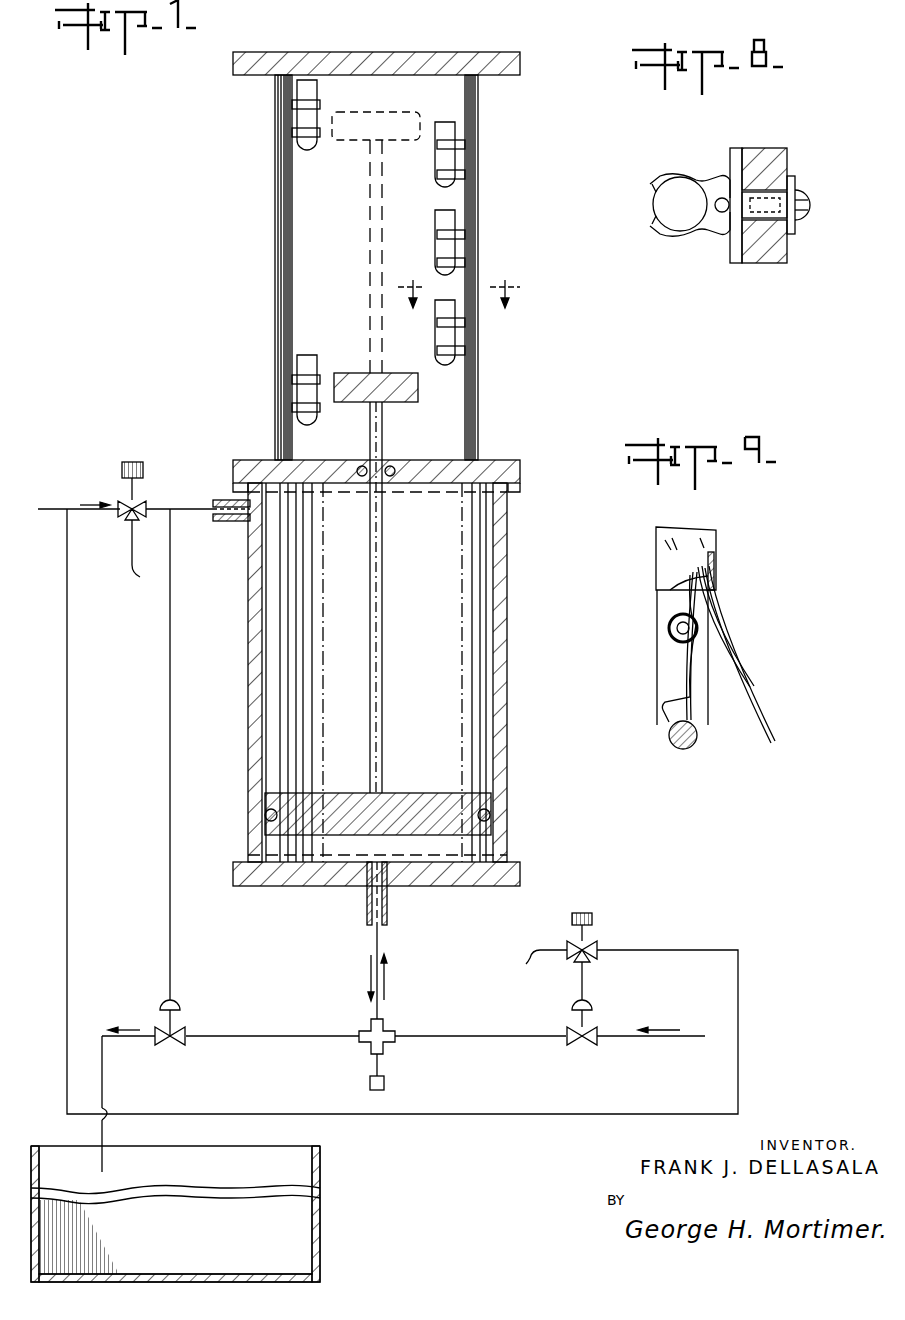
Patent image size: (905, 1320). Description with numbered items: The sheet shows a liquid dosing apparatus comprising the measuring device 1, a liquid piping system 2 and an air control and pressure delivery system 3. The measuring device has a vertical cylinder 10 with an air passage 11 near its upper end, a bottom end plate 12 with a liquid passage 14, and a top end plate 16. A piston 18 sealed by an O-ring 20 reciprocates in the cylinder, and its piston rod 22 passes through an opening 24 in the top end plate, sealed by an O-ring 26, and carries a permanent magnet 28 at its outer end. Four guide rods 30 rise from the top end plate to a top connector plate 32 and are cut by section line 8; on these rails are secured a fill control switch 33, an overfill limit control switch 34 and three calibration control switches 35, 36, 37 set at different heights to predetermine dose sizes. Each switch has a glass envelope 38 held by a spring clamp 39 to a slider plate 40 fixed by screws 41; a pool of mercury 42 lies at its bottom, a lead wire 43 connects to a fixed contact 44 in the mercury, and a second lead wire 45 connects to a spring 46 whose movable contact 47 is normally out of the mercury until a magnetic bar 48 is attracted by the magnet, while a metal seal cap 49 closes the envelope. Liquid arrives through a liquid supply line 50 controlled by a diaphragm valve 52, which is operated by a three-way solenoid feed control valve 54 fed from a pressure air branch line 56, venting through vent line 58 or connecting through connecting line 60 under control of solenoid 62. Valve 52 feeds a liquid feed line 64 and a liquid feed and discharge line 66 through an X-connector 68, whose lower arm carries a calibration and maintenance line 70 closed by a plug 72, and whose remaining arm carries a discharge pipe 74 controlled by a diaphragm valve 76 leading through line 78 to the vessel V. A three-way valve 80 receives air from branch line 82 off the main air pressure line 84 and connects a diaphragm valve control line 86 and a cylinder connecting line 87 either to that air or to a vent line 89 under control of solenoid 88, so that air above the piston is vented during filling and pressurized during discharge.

In FIG. 1, the measuring device 1 is at (510, 693).
In FIG. 1, the liquid piping system 2 is at (498, 1045).
In FIG. 1, the air control and pressure delivery system 3 is at (186, 508).
In FIG. 1, the section line 8– 8 is at (458, 300).
In FIG. 1, the cylinder 10 is at (493, 632).
In FIG. 1, the air passage 11 is at (262, 511).
In FIG. 1, the bottom end plate 12 is at (252, 886).
In FIG. 1, the liquid passage 14 is at (377, 865).
In FIG. 1, the top end plate 16 is at (492, 460).
In FIG. 1, the piston 18 is at (362, 794).
In FIG. 1, the O-ring 20 is at (482, 806).
In FIG. 1, the piston rod 22 is at (382, 702).
In FIG. 1, the opening 24 is at (362, 466).
In FIG. 1, the O-ring 26 is at (392, 476).
In FIG. 1, the permanent magnet 28 is at (415, 402).
In FIG. 1, the guide rods 30 is at (478, 140).
In FIG. 8, the guide rods 30 is at (760, 148).
In FIG. 1, the top connector plate 32 is at (520, 60).
In FIG. 1, the fill control switch 33 is at (312, 355).
In FIG. 1, the overfill limit control switch 34 is at (315, 150).
In FIG. 1, the calibration control switch 35 is at (435, 338).
In FIG. 8, the calibration control switch 35 is at (653, 200).
In FIG. 1, the calibration control switch 36 is at (435, 243).
In FIG. 1, the calibration control switch 37 is at (435, 165).
In FIG. 9, the glass envelope 38 is at (657, 660).
In FIG. 8, the spring clamp 39 is at (678, 235).
In FIG. 8, the slider plate 40 is at (730, 152).
In FIG. 8, the screws 41 is at (722, 198).
In FIG. 9, the pool of mercury 42 is at (670, 742).
In FIG. 9, the lead wire 43 is at (752, 672).
In FIG. 9, the fixed contact 44 is at (697, 720).
In FIG. 9, the second lead wire 45 is at (771, 728).
In FIG. 9, the spring 46 is at (669, 628).
In FIG. 9, the movable contact 47 is at (669, 725).
In FIG. 9, the magnetic bar 48 is at (660, 708).
In FIG. 9, the metal seal cap 49 is at (716, 568).
In FIG. 1, the liquid supply line 50 is at (660, 1038).
In FIG. 1, the valve 52 is at (584, 1045).
In FIG. 1, the three-way solenoid feed control valve 54 is at (588, 950).
In FIG. 1, the pressure air branch line 56 is at (645, 950).
In FIG. 1, the vent line 58 is at (528, 943).
In FIG. 1, the connecting line 60 is at (583, 985).
In FIG. 1, the solenoid 62 is at (585, 912).
In FIG. 1, the liquid feed line 64 is at (478, 1036).
In FIG. 1, the liquid feed and discharge line 66 is at (378, 938).
In FIG. 1, the X-connector 68 is at (395, 1031).
In FIG. 1, the calibration and maintenance line 70 is at (378, 1065).
In FIG. 1, the plug 72 is at (382, 1090).
In FIG. 1, the pipe 74 is at (304, 1033).
In FIG. 1, the valve 76 is at (174, 1000).
In FIG. 1, the line 78 is at (105, 1040).
In FIG. 1, the three-way valve 80 is at (122, 494).
In FIG. 1, the pressure air branch line 82 is at (78, 512).
In FIG. 1, the main air pressure line 84 is at (66, 509).
In FIG. 1, the diaphragm valve control line 86 is at (170, 675).
In FIG. 1, the cylinder connecting line 87 is at (176, 514).
In FIG. 1, the solenoid 88 is at (132, 462).
In FIG. 1, the vent line 89 is at (126, 575).
In FIG. 1, the vessel V is at (320, 1168).